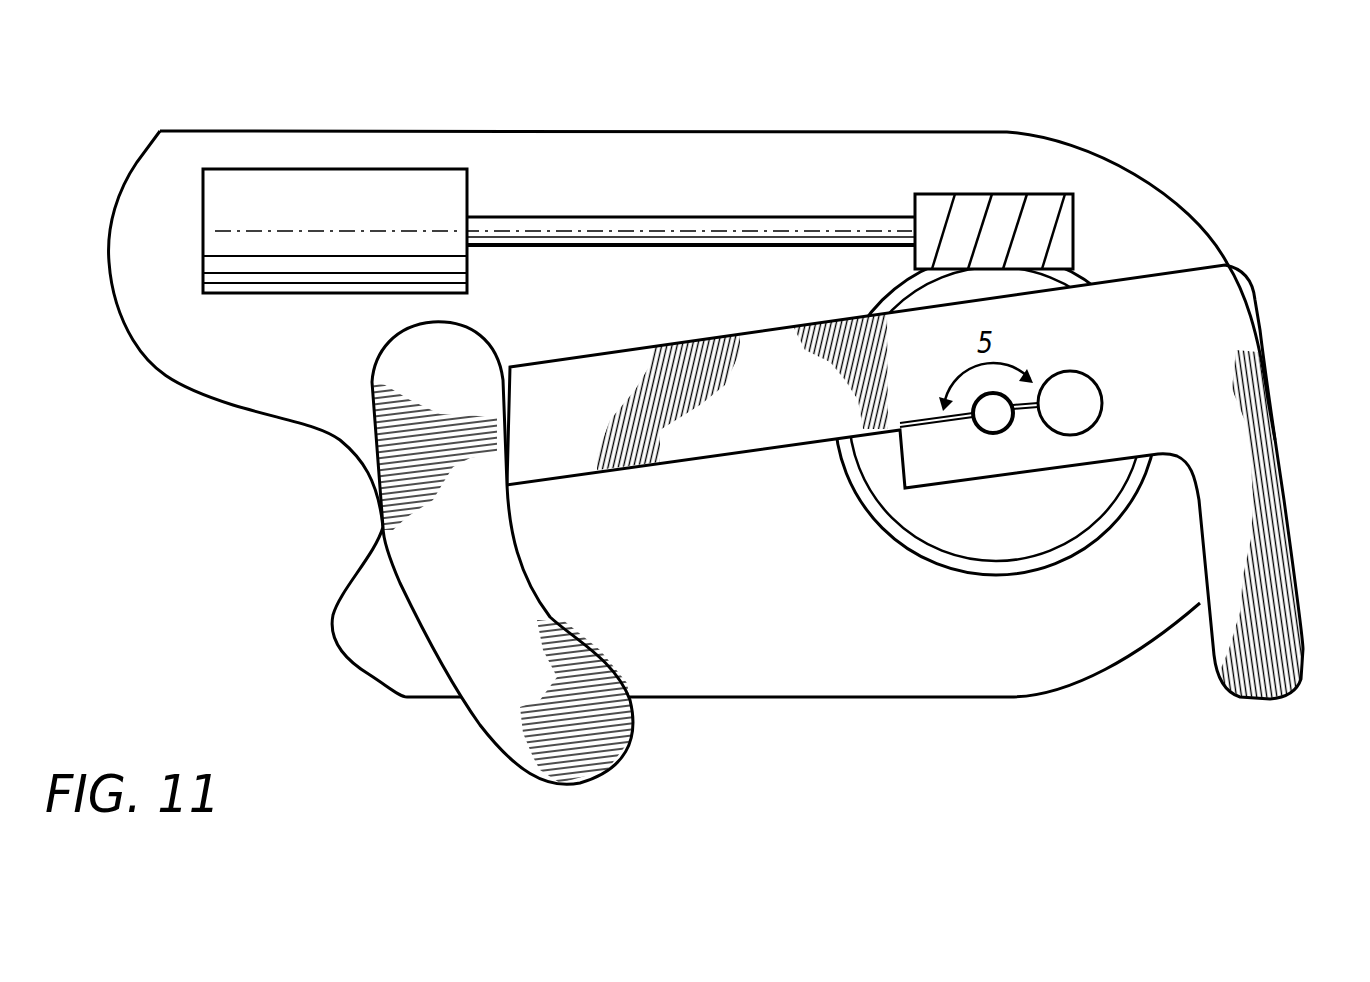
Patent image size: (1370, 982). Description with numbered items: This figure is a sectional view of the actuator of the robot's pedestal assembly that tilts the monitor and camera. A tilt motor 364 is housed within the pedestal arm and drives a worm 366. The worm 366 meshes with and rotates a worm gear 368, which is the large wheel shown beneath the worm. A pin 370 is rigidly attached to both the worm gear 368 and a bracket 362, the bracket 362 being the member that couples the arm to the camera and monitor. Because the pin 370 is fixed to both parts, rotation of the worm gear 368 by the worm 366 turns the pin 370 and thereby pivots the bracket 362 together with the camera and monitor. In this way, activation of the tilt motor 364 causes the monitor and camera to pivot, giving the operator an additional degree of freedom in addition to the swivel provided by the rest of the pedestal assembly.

The bracket 362 is at (748, 413).
The tilt motor 364 is at (315, 193).
The worm 366 is at (995, 232).
The worm gear 368 is at (1000, 530).
The pin 370 is at (1003, 428).